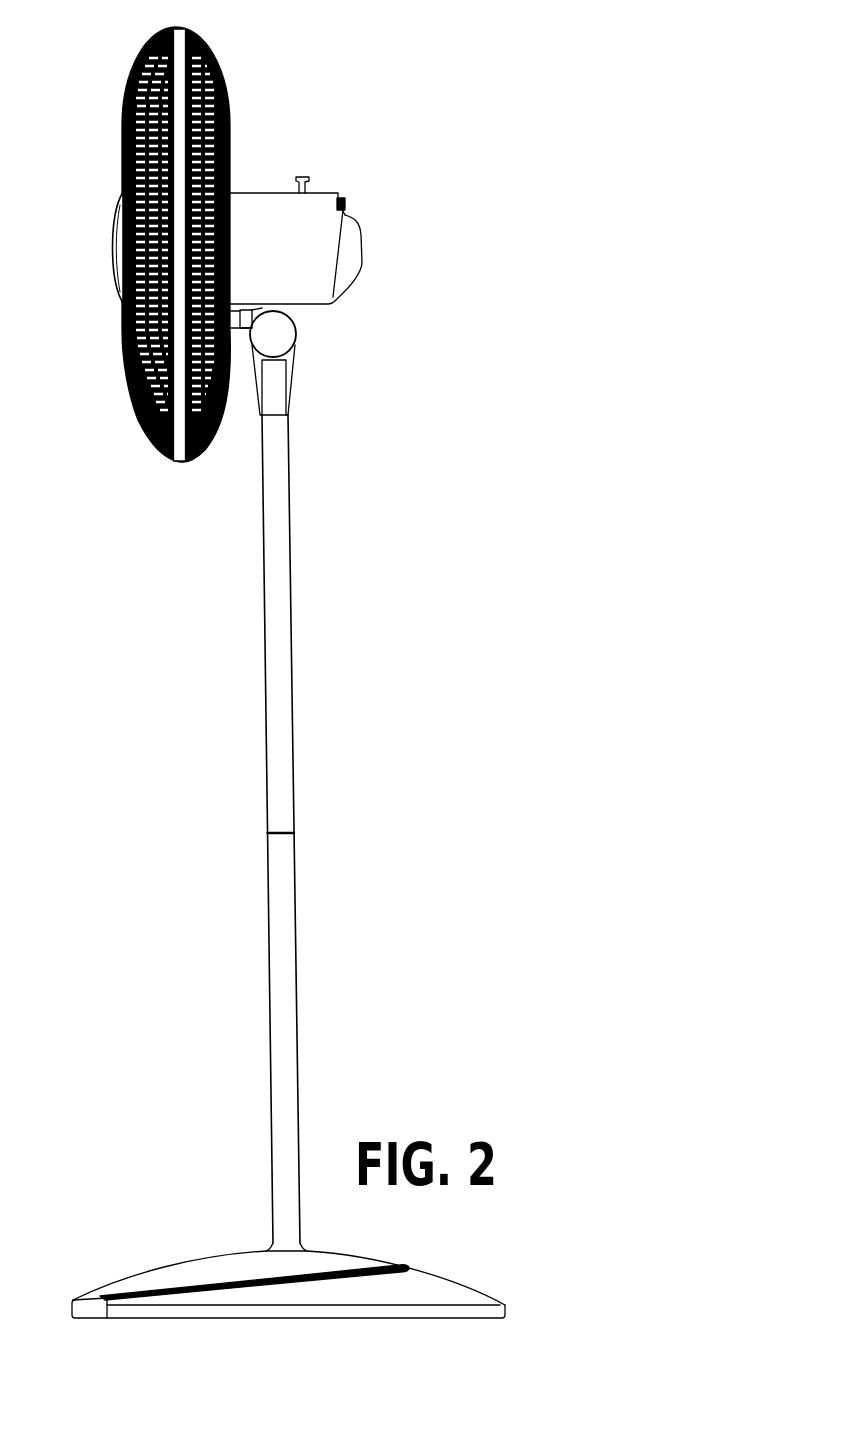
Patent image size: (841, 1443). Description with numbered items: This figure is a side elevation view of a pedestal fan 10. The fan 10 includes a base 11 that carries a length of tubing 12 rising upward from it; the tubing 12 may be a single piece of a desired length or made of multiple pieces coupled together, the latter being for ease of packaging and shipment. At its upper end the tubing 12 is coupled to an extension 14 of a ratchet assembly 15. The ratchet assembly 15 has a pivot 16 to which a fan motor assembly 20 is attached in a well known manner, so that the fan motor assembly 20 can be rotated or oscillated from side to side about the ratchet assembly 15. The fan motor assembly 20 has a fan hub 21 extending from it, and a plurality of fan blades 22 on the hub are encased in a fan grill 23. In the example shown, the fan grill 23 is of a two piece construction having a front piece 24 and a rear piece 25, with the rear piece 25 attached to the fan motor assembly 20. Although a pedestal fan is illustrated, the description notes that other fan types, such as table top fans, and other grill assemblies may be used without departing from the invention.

The fan 10 is at (428, 629).
The base 11 is at (346, 1256).
The tubing 12 is at (290, 790).
The extension 14 is at (275, 388).
The ratchet assembly 15 is at (341, 382).
The pivot 16 is at (262, 309).
The fan motor assembly 20 is at (265, 205).
The fan hub 21 is at (114, 250).
The fan blades 22 is at (124, 350).
The fan grill 23 is at (195, 497).
The front piece of fan grill 24 is at (123, 153).
The rear piece of fan grill 25 is at (233, 96).